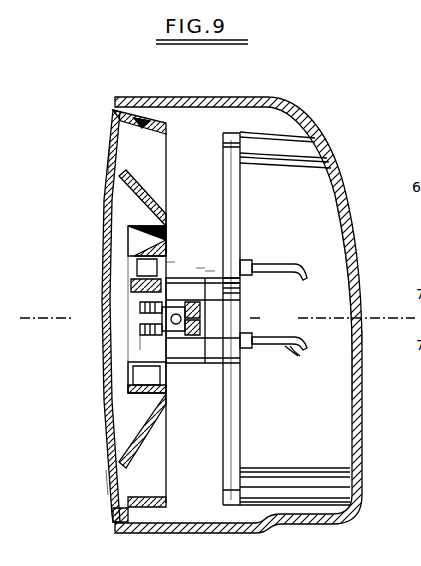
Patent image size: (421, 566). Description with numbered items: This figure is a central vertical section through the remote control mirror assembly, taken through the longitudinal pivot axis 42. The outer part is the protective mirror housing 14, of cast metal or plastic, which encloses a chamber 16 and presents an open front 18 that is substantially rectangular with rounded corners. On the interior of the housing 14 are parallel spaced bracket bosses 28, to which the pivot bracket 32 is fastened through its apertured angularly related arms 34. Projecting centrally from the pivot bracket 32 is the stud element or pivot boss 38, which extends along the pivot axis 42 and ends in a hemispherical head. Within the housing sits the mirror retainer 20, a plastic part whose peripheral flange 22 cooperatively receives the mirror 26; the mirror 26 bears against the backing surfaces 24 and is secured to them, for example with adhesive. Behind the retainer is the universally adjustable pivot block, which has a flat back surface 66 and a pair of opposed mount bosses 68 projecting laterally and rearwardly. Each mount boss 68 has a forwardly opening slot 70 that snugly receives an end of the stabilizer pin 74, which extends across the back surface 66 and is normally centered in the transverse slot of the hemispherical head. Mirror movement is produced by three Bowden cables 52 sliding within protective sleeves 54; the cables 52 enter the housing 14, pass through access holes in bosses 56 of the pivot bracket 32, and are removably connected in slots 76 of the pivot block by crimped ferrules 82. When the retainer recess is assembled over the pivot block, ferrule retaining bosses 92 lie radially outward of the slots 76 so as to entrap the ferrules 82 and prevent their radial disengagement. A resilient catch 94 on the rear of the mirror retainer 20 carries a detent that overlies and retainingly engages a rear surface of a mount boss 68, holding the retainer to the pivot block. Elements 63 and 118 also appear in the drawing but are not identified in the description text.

The protective mirror housing 14 is at (329, 156).
The chamber 16 is at (258, 118).
The open front 18 is at (114, 108).
The mirror retainer 20 is at (153, 122).
The peripheral flange 22 is at (114, 514).
The backing surfaces 24 is at (111, 481).
The mirror 26 is at (108, 157).
The bracket bosses 28 is at (281, 160).
The pivot bracket 32 is at (241, 410).
The angularly related arms 34 is at (223, 175).
The pivot boss 38 is at (206, 272).
The longitudinal pivot axis 42 is at (78, 309).
The Bowden cables 52 is at (193, 268).
The protective sleeves 54 is at (293, 267).
The bosses 56 is at (250, 260).
The bearing support 63 is at (133, 288).
The flat back surface 66 is at (168, 357).
The mount bosses 68 is at (147, 337).
The forwardly opening slot 70 is at (147, 318).
The stabilizer pin 74 is at (203, 310).
The slots 76 is at (167, 268).
The ferrules 82 is at (140, 268).
The ferrule retaining bosses 92 is at (143, 244).
The resilient catch 94 is at (203, 324).
The connector 118 is at (378, 330).